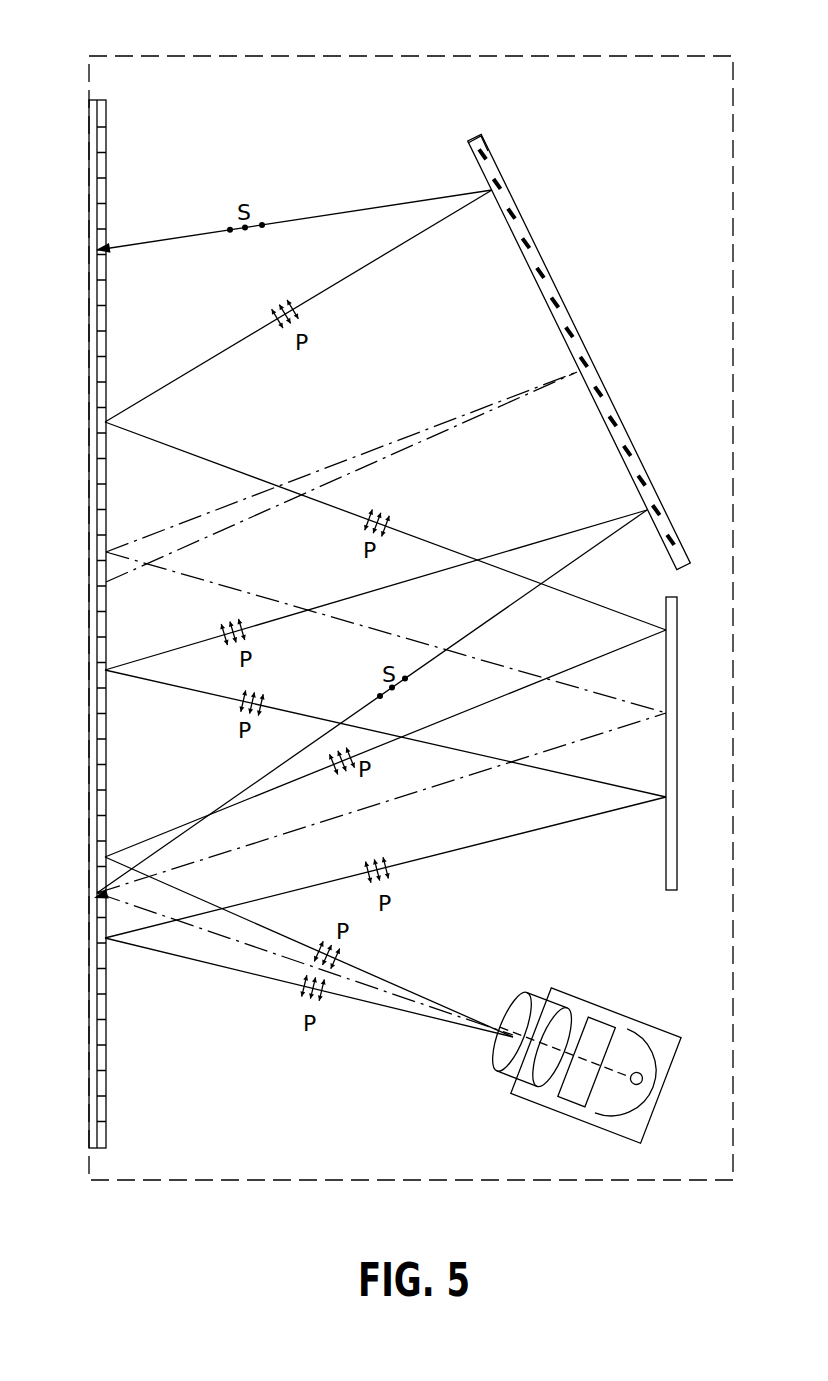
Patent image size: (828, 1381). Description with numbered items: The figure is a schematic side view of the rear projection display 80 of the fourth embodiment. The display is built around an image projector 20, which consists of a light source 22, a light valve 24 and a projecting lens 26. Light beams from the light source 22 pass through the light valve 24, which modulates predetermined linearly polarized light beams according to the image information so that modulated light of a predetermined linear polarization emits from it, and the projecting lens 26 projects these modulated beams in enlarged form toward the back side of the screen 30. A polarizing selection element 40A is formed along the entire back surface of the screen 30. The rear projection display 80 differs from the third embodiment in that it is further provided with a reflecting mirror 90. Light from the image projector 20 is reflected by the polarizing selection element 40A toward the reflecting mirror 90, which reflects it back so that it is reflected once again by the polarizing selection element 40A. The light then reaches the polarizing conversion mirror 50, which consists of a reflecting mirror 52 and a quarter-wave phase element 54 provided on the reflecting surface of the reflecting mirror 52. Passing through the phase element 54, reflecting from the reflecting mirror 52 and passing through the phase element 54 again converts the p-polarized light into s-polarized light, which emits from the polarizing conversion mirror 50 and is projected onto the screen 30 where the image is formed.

The rear projection display 80 is at (428, 29).
The screen 30 is at (103, 622).
The polarizing selection element 40A is at (107, 103).
The polarizing conversion mirror 50 is at (551, 319).
The reflecting mirror 52 is at (508, 187).
The λ/4 phase element 54 is at (472, 158).
The reflecting mirror 90 is at (677, 605).
The image projector 20 is at (530, 1069).
The light source 22 is at (580, 1059).
The light valve 24 is at (587, 1062).
The projecting lens 26 is at (532, 1039).